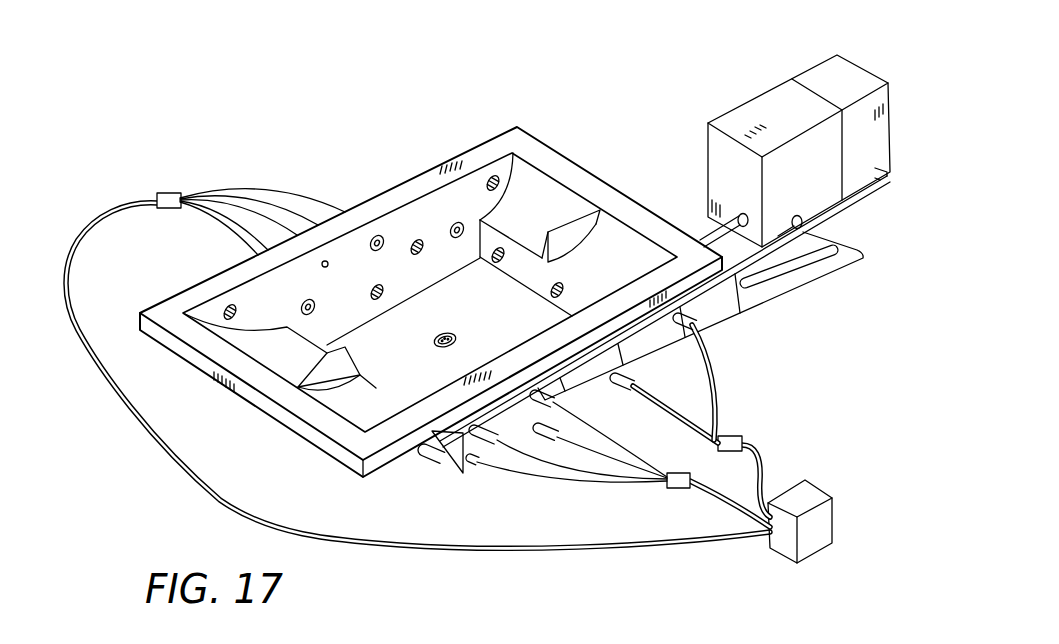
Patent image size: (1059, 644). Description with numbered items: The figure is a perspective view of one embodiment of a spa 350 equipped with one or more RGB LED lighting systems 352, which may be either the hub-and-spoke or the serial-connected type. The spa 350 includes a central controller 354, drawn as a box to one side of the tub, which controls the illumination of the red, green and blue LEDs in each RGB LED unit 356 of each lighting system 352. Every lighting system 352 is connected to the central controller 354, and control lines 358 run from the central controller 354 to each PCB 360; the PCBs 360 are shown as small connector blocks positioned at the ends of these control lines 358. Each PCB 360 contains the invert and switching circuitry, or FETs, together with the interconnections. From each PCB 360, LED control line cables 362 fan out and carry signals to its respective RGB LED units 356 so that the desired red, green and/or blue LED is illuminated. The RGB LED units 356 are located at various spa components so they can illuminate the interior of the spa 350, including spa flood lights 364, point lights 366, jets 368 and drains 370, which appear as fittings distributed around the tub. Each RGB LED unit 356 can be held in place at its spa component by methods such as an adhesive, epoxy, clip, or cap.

The spa 350 is at (346, 95).
The lighting system 352 is at (96, 206).
The central controller 354 is at (817, 553).
The RGB LED unit 356 is at (472, 463).
The control line 358 is at (196, 480).
The PCB 360 is at (168, 192).
The LED control line cable 362 is at (262, 188).
The spa flood light 364 is at (415, 240).
The point light 366 is at (324, 261).
The jet 368 is at (302, 301).
The drain 370 is at (436, 344).